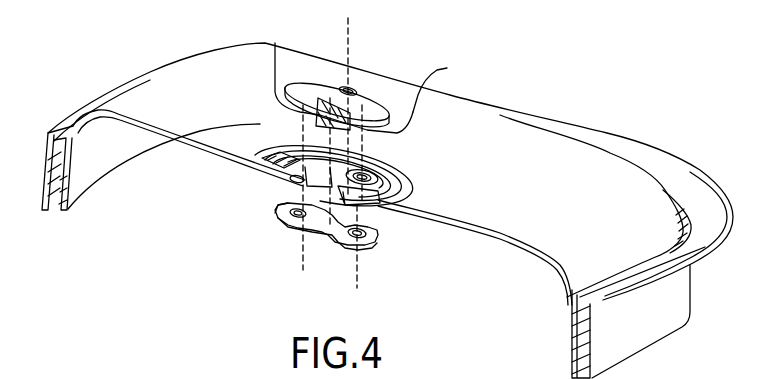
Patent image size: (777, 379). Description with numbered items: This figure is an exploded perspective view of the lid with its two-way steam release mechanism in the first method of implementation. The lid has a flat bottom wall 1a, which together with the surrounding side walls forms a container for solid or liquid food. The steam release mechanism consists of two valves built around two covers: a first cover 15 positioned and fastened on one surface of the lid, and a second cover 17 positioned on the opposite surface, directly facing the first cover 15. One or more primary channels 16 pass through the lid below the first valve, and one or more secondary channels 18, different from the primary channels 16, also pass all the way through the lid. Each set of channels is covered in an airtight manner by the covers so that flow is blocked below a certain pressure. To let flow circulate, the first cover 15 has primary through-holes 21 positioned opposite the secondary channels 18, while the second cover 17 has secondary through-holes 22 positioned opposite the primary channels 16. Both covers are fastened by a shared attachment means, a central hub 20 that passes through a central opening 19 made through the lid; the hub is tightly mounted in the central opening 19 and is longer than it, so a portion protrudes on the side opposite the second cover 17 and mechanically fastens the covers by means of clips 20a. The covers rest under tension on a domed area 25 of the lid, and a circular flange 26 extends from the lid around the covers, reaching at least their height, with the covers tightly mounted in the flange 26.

The bottom wall 1a is at (643, 184).
The first cover 15 is at (380, 247).
The primary channels 16 is at (378, 165).
The second cover 17 is at (384, 117).
The secondary channels 18 is at (296, 178).
The central opening 19 is at (372, 236).
The central hub 20 is at (275, 43).
The clips 20a is at (450, 83).
The primary through-holes 21 is at (283, 223).
The secondary through-holes 22 is at (351, 90).
The domed area 25 is at (300, 174).
The flange 26 is at (258, 157).